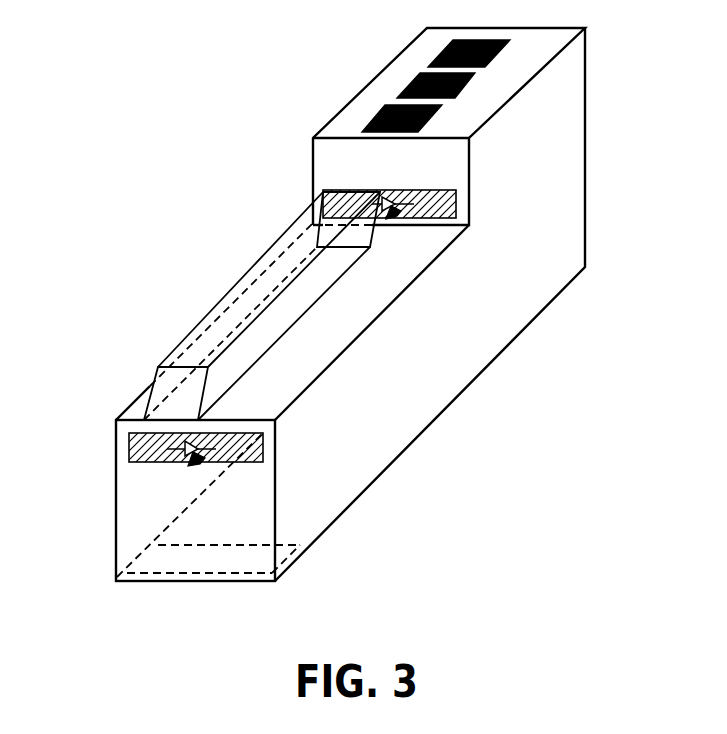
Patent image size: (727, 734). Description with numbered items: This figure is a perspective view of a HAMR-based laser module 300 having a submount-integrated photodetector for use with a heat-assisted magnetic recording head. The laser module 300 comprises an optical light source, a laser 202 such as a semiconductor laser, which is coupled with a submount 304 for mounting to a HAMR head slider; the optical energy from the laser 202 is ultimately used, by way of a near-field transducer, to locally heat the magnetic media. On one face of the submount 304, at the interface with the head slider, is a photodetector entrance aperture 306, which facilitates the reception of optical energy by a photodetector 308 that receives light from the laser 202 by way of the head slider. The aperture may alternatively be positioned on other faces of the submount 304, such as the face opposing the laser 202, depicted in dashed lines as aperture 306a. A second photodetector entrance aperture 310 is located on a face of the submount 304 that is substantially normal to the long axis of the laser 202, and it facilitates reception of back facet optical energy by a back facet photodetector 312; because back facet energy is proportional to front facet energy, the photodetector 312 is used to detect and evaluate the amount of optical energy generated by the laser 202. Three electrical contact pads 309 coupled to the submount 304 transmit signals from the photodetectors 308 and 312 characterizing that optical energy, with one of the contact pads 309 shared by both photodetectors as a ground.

The laser module 300 is at (157, 166).
The laser 202 is at (250, 304).
The submount 304 is at (443, 370).
The aperture 306 is at (130, 450).
The aperture 306a is at (285, 549).
The photodetector 308 is at (217, 457).
The electrical contact pads 309 is at (445, 49).
The aperture 310 is at (323, 194).
The back facet photodetector 312 is at (413, 218).